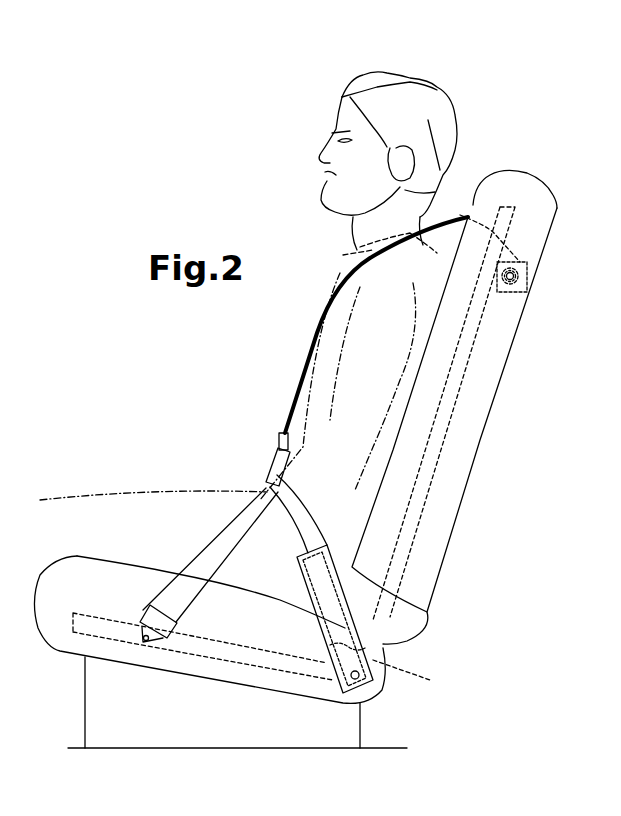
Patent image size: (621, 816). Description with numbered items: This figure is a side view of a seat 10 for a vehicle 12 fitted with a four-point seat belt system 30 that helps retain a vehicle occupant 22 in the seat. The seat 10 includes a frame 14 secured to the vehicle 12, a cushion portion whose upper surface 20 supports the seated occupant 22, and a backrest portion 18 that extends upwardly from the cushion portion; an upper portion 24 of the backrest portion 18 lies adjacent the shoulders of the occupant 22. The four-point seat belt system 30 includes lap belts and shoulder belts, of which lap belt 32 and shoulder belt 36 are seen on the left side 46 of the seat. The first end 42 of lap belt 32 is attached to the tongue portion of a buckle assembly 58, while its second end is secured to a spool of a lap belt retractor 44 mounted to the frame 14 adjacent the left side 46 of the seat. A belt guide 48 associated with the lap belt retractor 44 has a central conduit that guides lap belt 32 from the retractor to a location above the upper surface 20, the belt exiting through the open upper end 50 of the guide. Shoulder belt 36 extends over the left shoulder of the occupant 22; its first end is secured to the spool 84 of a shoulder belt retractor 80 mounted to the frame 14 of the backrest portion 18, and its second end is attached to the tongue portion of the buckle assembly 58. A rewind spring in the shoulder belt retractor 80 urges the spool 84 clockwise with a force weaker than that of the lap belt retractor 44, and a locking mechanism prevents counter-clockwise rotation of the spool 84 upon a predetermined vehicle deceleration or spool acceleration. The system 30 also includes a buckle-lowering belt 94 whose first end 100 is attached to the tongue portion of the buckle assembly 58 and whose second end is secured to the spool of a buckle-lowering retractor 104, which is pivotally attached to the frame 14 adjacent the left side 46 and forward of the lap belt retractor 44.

The seat 10 is at (508, 477).
The vehicle 12 is at (387, 747).
The frame 14 is at (400, 557).
The backrest portion 18 is at (480, 407).
The upper surface 20 is at (125, 558).
The vehicle occupant 22 is at (407, 80).
The upper portion 24 is at (540, 218).
The four-point seat belt system 30 is at (290, 246).
The lap belt 32 is at (298, 518).
The shoulder belt 36 is at (315, 343).
The first end 42 is at (277, 473).
The lap belt retractor 44 is at (383, 667).
The left side 46 is at (463, 437).
The belt guide 48 is at (380, 583).
The open upper end 50 is at (312, 540).
The buckle assembly 58 is at (275, 446).
The shoulder belt retractor 80 is at (525, 262).
The spool 84 is at (523, 295).
The buckle-lowering belt 94 is at (218, 545).
The first end 100 is at (258, 497).
The buckle-lowering retractor 104 is at (162, 638).